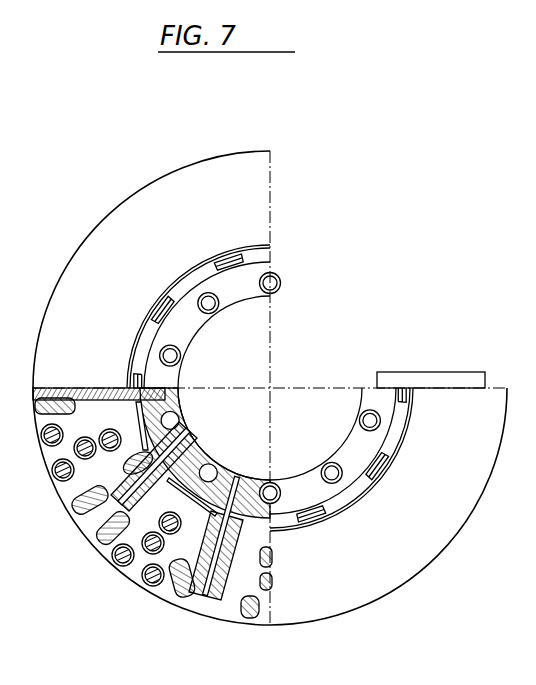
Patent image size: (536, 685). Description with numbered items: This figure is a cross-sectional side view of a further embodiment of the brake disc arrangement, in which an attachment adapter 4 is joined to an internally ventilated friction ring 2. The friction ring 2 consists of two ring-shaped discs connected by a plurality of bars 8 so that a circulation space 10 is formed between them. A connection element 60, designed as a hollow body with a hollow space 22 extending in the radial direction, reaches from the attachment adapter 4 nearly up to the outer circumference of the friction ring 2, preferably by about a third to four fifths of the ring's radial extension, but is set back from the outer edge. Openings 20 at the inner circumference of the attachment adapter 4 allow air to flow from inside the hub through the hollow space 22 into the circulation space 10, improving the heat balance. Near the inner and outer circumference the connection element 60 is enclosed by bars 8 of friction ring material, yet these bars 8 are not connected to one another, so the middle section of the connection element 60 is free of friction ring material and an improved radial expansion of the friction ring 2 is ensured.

The friction ring 2 is at (414, 558).
The attachment adapter 4 is at (350, 435).
The bars 8 is at (225, 600).
The circulation space 10 is at (108, 548).
The openings 20 is at (187, 460).
The hollow space 22 is at (128, 488).
The connection element 60 is at (175, 442).